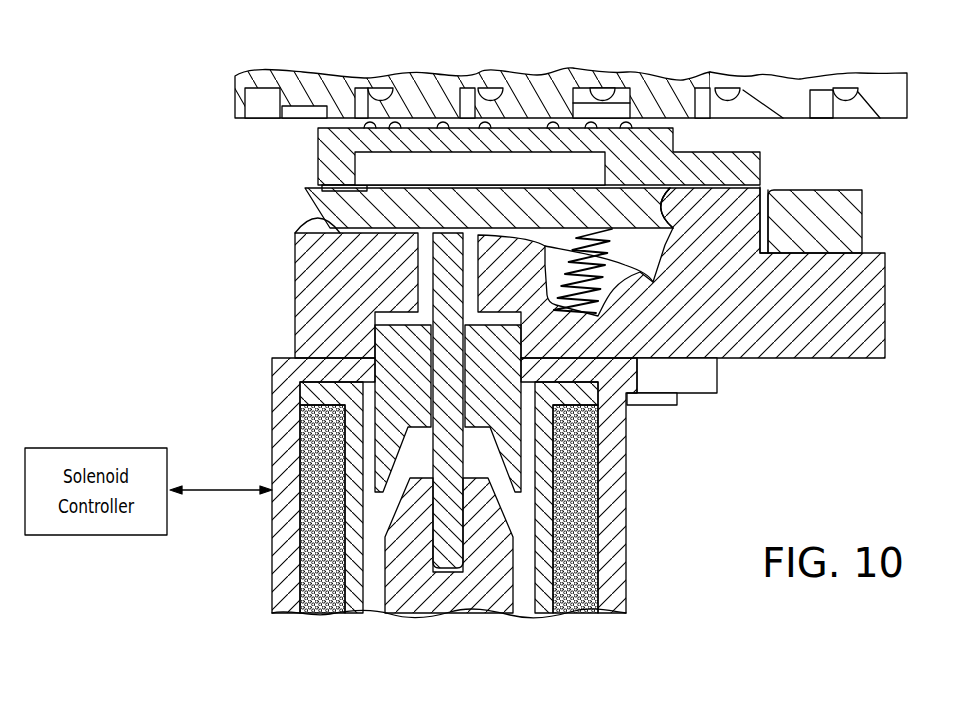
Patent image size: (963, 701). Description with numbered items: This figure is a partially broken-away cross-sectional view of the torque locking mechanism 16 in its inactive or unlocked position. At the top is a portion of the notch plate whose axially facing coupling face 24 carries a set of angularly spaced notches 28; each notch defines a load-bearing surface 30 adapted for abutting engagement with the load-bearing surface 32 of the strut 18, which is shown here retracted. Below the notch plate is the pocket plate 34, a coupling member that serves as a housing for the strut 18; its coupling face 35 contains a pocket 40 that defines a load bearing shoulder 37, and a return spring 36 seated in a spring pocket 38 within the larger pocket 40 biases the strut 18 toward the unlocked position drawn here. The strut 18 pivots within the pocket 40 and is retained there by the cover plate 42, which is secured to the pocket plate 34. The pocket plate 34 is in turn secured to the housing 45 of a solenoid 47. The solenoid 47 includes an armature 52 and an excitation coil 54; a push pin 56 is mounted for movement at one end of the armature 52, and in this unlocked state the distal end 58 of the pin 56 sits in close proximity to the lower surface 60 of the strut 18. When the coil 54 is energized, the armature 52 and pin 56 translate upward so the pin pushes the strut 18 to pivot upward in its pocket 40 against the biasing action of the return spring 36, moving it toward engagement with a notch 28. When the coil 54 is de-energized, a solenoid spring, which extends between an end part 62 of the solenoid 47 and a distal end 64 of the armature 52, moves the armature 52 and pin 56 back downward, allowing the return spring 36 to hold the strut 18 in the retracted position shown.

The torque locking mechanism 16 is at (181, 153).
The strut 18 is at (550, 172).
The coupling face 24 is at (697, 113).
The notches 28 is at (383, 98).
The load-bearing surface 30 is at (362, 100).
The load-bearing surface 32 is at (305, 213).
The pocket plate 34 is at (873, 241).
The coupling face 35 is at (783, 180).
The return spring 36 is at (697, 193).
The load bearing shoulder 37 is at (662, 212).
The spring pocket 38 is at (597, 318).
The pocket 40 is at (295, 233).
The cover plate 42 is at (772, 172).
The housing 45 is at (272, 568).
The solenoid 47 is at (639, 575).
The armature 52 is at (475, 585).
The excitation coil 54 is at (310, 470).
The push pin 56 is at (453, 390).
The distal end 58 is at (447, 232).
The lower surface 60 is at (338, 230).
The end part 62 is at (372, 425).
The distal end 64 is at (485, 472).